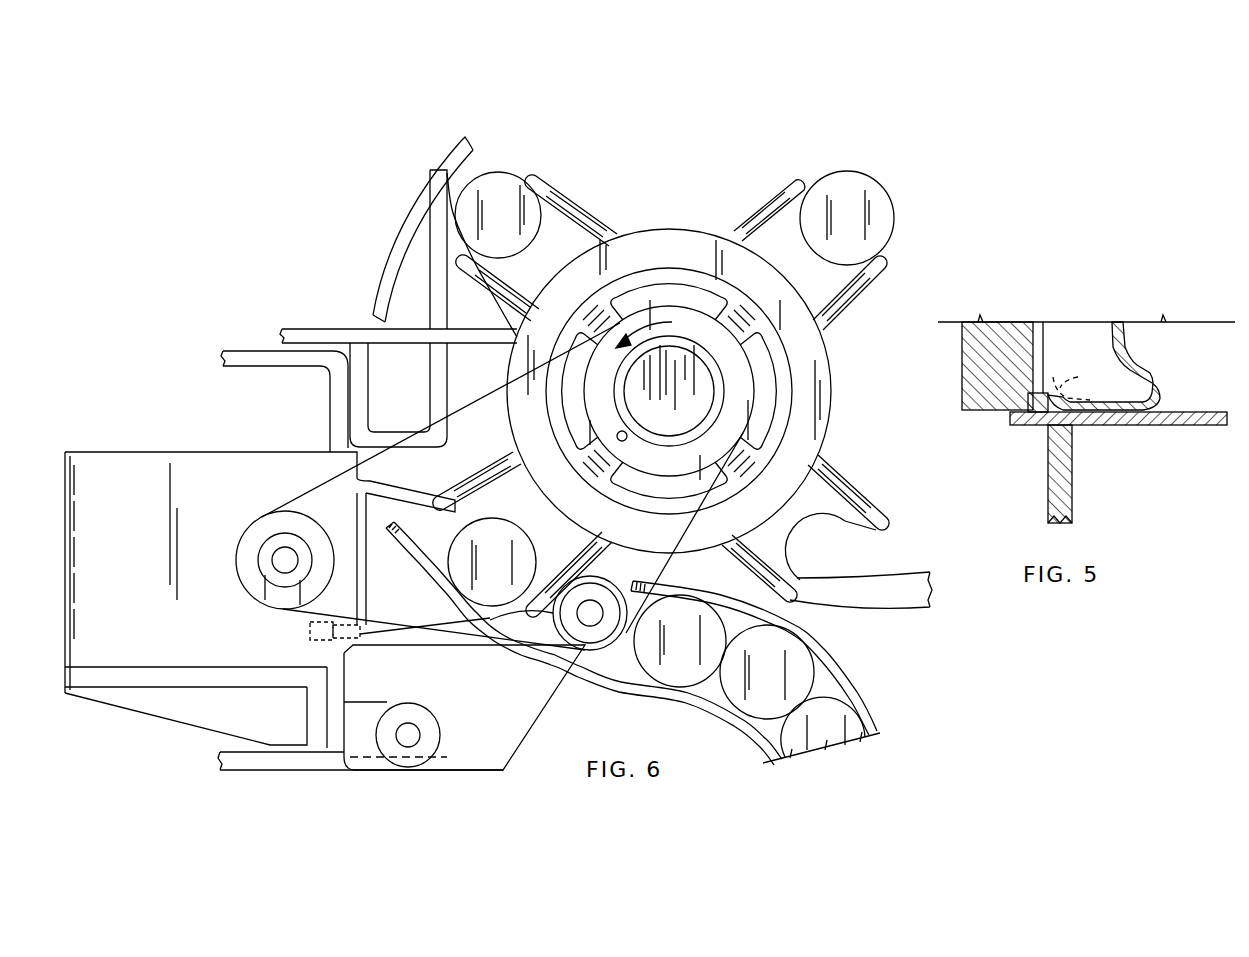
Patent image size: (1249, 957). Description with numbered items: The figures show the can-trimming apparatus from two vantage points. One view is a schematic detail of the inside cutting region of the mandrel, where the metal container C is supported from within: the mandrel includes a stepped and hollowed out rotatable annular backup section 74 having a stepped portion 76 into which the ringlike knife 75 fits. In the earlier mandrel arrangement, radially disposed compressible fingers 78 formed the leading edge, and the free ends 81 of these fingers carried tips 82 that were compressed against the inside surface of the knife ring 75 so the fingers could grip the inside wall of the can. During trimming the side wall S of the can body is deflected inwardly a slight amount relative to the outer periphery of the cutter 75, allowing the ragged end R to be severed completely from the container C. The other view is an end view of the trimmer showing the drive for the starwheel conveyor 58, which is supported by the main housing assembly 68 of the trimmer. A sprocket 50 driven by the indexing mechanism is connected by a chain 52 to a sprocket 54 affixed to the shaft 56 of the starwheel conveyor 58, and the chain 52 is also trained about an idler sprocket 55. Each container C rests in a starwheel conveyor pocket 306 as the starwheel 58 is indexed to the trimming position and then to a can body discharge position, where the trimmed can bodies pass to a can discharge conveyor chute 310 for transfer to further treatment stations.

In FIG. 6, the sprocket 50 is at (258, 533).
In FIG. 6, the chain 52 is at (317, 483).
In FIG. 6, the sprocket 54 is at (743, 368).
In FIG. 6, the idler sprocket 55 is at (585, 632).
In FIG. 6, the shaft 56 is at (703, 407).
In FIG. 6, the starwheel conveyor 58 is at (718, 196).
In FIG. 6, the main housing assembly 68 is at (218, 340).
In FIG. 6, the starwheel conveyor pocket 306 is at (528, 172).
In FIG. 6, the can discharge conveyor chute 310 is at (641, 706).
In FIG. 5, the backup section 74 is at (981, 366).
In FIG. 5, the knife ring 75 is at (1028, 398).
In FIG. 5, the stepped portion 76 is at (1037, 413).
In FIG. 5, the compressible fingers 78 is at (1157, 373).
In FIG. 5, the free ends 81 is at (1048, 390).
In FIG. 5, the tips 82 is at (1087, 365).
In FIG. 6, the container C is at (494, 210).
In FIG. 5, the container C is at (1132, 425).
In FIG. 5, the side wall S is at (1200, 425).
In FIG. 5, the ragged end R is at (1030, 413).